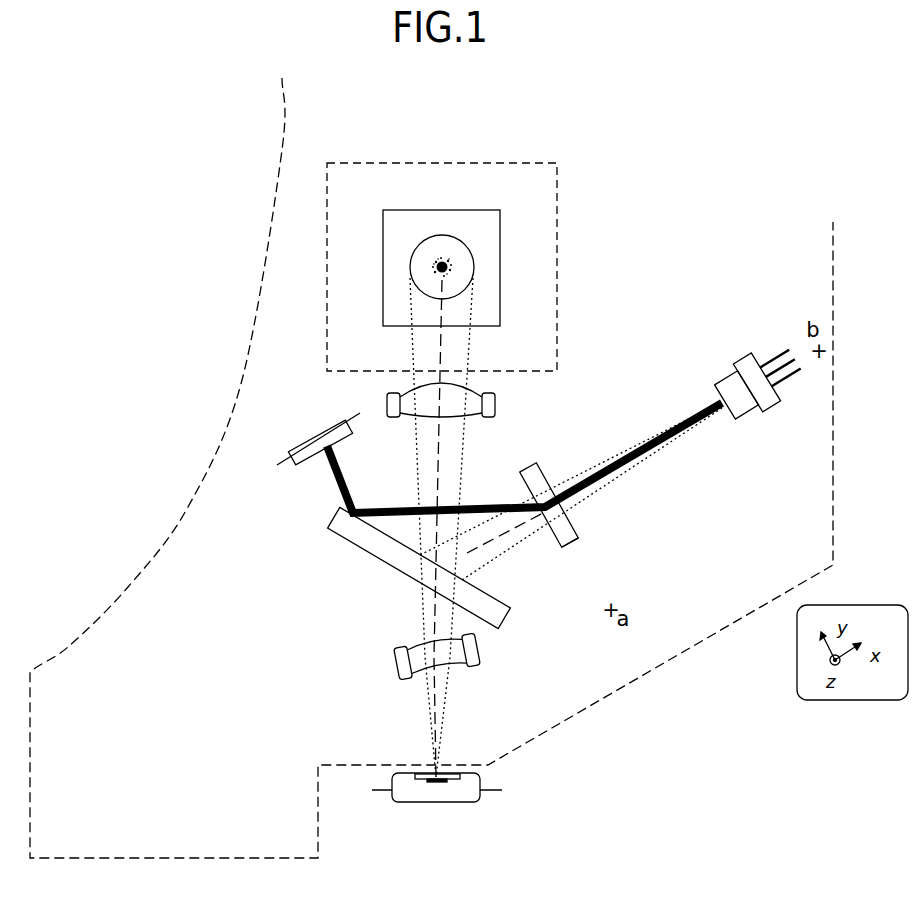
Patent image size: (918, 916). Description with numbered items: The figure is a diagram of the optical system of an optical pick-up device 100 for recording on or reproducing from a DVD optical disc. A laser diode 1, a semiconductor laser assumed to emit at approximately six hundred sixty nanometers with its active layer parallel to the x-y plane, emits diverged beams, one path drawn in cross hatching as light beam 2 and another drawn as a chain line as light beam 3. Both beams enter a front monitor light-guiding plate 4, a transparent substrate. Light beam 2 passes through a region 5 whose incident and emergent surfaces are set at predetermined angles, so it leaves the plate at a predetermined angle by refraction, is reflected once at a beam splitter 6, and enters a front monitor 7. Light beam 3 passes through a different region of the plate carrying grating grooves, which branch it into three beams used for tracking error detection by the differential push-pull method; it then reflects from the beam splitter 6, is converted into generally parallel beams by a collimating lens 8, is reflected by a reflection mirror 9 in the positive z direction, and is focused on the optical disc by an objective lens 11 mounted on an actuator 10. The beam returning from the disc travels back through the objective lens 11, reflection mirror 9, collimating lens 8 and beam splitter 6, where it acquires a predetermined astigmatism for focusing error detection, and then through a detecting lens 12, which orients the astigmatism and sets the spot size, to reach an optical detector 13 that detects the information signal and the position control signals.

The laser diode 1 is at (713, 388).
The light beam 2 is at (627, 469).
The light beam 3 is at (598, 490).
The front monitor light-guiding plate 4 is at (568, 542).
The region 5 is at (535, 500).
The beam splitter 6 is at (510, 610).
The front monitor 7 is at (318, 438).
The collimating lens 8 is at (495, 403).
The reflection mirror 9 is at (490, 315).
The actuator 10 is at (557, 265).
The objective lens 11 is at (445, 236).
The detecting lens 12 is at (400, 663).
The optical detector 13 is at (437, 803).
The optical pick-up device 100 is at (680, 657).